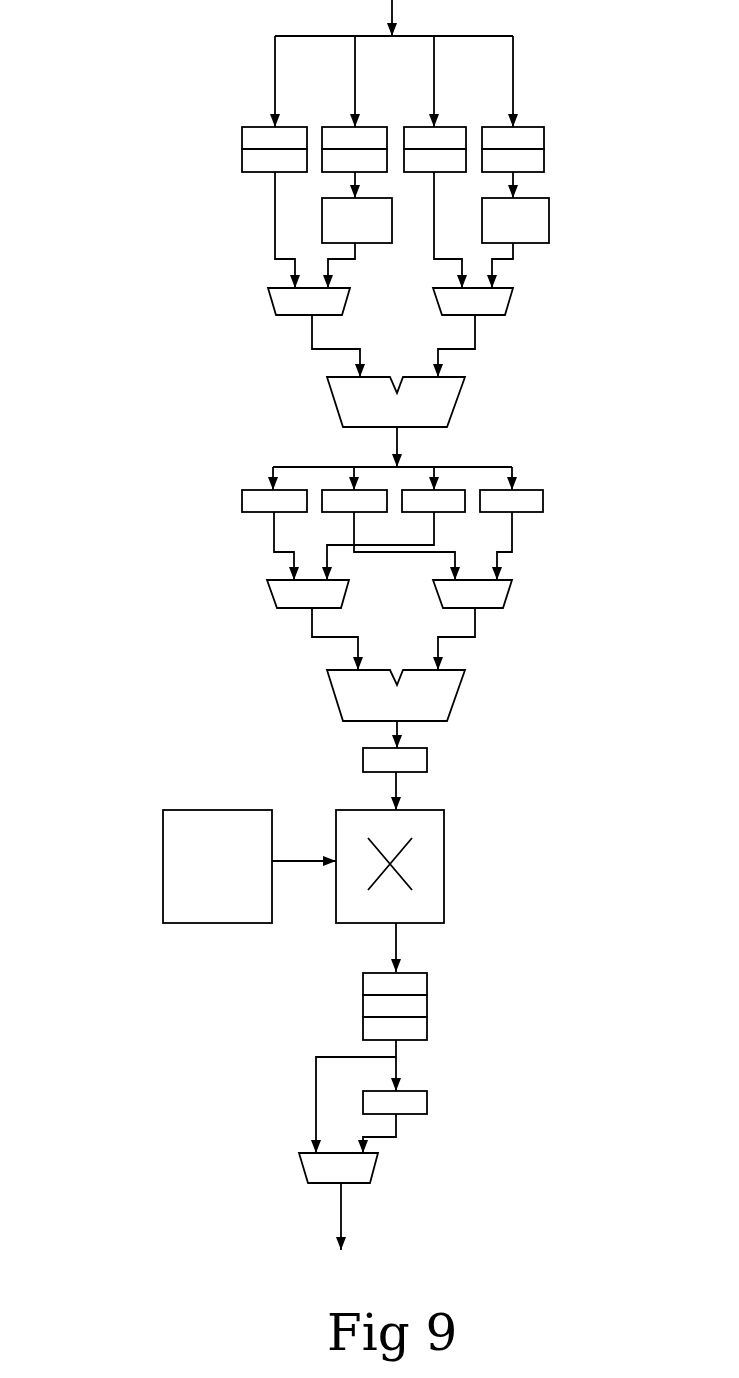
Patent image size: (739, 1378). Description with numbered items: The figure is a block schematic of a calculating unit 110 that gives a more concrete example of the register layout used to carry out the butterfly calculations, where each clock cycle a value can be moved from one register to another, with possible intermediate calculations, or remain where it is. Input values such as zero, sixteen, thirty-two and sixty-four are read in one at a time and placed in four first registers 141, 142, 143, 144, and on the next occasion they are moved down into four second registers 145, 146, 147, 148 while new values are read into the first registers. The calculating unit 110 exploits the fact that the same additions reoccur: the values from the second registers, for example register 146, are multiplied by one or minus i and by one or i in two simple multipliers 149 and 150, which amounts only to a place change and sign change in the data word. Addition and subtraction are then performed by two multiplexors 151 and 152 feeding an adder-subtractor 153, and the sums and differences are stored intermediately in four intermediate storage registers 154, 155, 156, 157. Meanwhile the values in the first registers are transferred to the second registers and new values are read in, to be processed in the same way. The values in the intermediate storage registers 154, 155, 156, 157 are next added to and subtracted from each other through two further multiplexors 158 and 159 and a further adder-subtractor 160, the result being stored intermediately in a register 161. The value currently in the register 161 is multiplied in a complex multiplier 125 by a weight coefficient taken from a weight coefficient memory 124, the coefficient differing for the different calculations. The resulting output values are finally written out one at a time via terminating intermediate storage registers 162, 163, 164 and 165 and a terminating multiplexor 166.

The calculating unit 110 is at (155, 52).
The weight coefficient memory 124 is at (163, 870).
The complex multiplier 125 is at (444, 873).
The first register 141 is at (242, 127).
The first register 142 is at (363, 127).
The first register 143 is at (418, 127).
The first register 144 is at (544, 128).
The second register 145 is at (258, 172).
The second register 146 is at (323, 171).
The second register 147 is at (462, 172).
The second register 148 is at (544, 160).
The simple multiplier 149 is at (322, 204).
The simple multiplier 150 is at (549, 205).
The multiplexor 151 is at (272, 305).
The multiplexor 152 is at (513, 288).
The adder-subtractor 153 is at (455, 401).
The intermediate storage register 154 is at (242, 497).
The intermediate storage register 155 is at (320, 490).
The intermediate storage register 156 is at (452, 489).
The intermediate storage register 157 is at (543, 495).
The further multiplexor 158 is at (272, 588).
The further multiplexor 159 is at (508, 592).
The further adder-subtractor 160 is at (457, 693).
The register 161 is at (427, 762).
The terminating intermediate storage register 162 is at (427, 980).
The terminating intermediate storage register 163 is at (427, 1004).
The terminating intermediate storage register 164 is at (422, 1042).
The terminating intermediate storage register 165 is at (427, 1114).
The terminating multiplexor 166 is at (377, 1167).